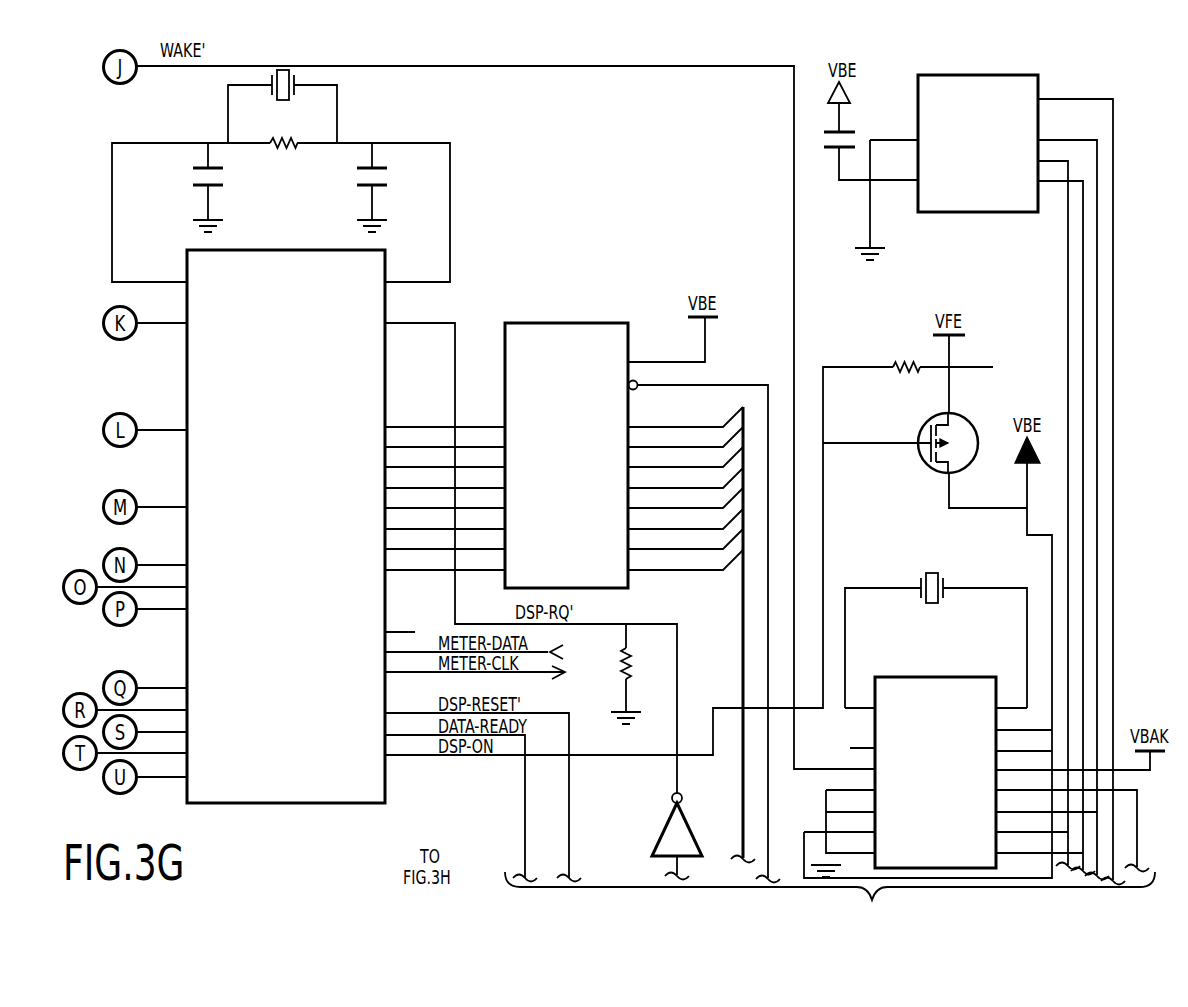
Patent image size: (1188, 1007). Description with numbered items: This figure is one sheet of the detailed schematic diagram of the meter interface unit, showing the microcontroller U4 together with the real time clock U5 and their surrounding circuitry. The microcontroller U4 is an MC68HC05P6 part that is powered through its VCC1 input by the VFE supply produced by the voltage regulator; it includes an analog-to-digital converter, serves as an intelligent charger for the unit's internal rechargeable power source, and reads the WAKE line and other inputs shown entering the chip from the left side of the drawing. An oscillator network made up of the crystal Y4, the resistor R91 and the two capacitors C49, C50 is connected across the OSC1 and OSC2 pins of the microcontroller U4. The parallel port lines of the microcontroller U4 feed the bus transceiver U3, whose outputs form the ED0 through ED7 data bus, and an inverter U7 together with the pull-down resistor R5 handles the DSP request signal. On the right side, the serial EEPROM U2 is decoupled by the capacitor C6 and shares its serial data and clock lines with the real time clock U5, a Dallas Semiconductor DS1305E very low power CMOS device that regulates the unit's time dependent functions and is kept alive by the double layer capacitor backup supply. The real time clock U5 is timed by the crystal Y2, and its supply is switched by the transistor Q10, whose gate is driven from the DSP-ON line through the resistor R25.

The microcontroller U4 is at (286, 528).
The 74HC245 bus transceiver U3 is at (603, 432).
The 93LC46 serial EEPROM U2 is at (977, 145).
The real time clock U5 is at (937, 751).
The 74HC04 inverter U7 is at (644, 837).
The 384 kHz crystal Y4 is at (334, 84).
The 32.768 kHz crystal Y2 is at (935, 564).
The 1M resistor R91 is at (287, 140).
The 10K resistor R5 is at (644, 666).
The 1M resistor R25 is at (905, 368).
The 180pF capacitor C49 is at (183, 180).
The 180pF capacitor C50 is at (397, 180).
The 0.1 uF capacitor C6 is at (829, 150).
The TP2105 P-channel MOSFET Q10 is at (920, 451).